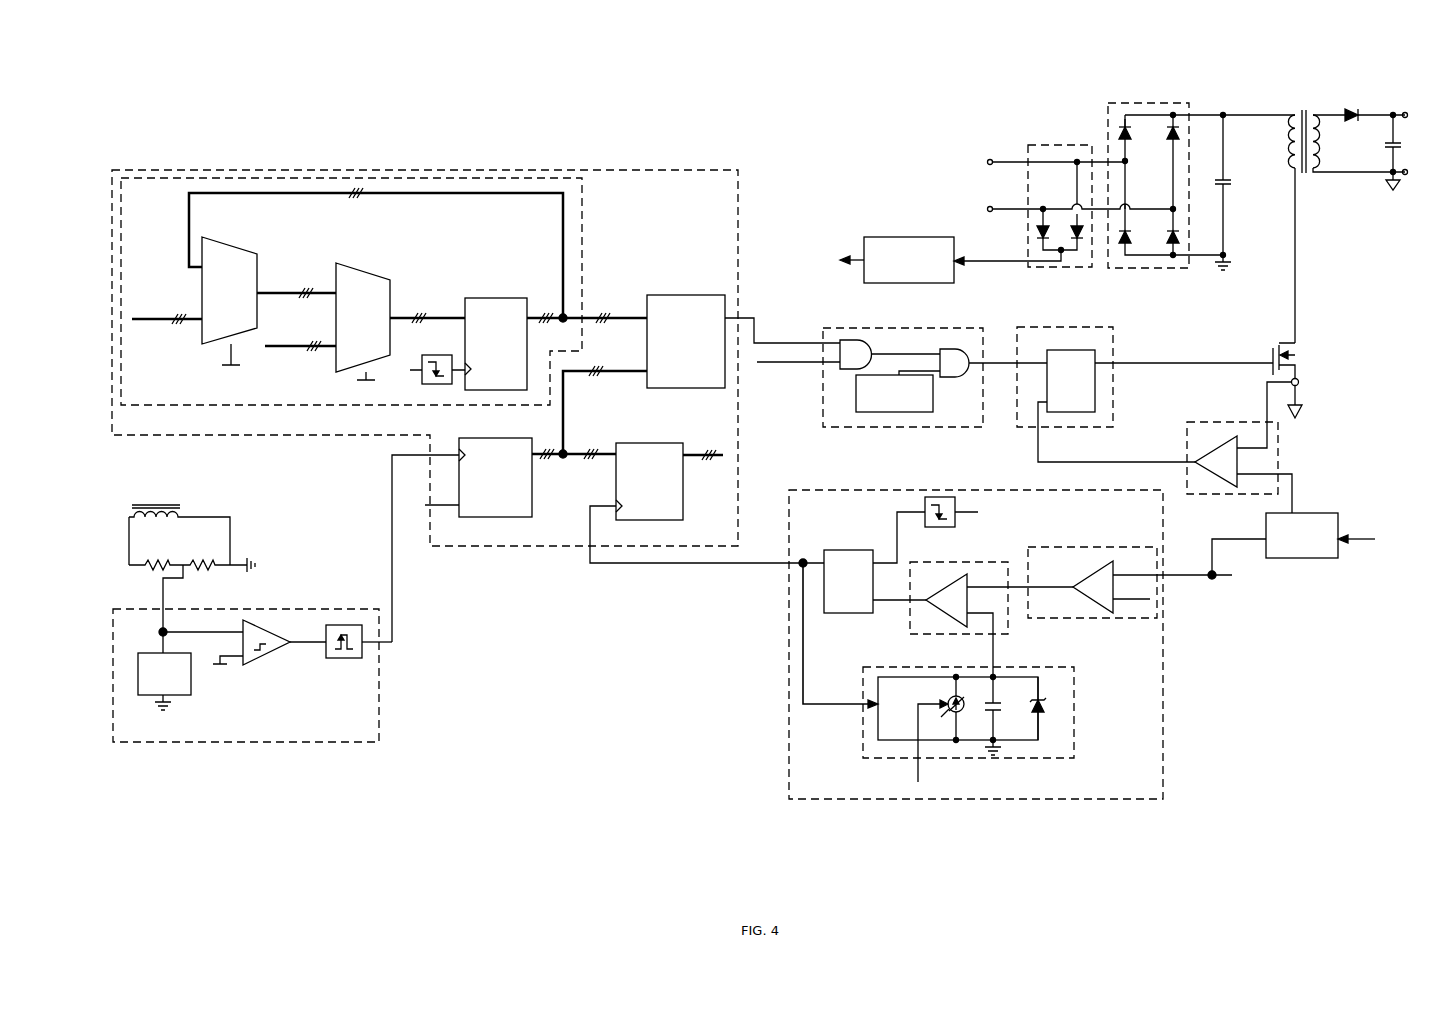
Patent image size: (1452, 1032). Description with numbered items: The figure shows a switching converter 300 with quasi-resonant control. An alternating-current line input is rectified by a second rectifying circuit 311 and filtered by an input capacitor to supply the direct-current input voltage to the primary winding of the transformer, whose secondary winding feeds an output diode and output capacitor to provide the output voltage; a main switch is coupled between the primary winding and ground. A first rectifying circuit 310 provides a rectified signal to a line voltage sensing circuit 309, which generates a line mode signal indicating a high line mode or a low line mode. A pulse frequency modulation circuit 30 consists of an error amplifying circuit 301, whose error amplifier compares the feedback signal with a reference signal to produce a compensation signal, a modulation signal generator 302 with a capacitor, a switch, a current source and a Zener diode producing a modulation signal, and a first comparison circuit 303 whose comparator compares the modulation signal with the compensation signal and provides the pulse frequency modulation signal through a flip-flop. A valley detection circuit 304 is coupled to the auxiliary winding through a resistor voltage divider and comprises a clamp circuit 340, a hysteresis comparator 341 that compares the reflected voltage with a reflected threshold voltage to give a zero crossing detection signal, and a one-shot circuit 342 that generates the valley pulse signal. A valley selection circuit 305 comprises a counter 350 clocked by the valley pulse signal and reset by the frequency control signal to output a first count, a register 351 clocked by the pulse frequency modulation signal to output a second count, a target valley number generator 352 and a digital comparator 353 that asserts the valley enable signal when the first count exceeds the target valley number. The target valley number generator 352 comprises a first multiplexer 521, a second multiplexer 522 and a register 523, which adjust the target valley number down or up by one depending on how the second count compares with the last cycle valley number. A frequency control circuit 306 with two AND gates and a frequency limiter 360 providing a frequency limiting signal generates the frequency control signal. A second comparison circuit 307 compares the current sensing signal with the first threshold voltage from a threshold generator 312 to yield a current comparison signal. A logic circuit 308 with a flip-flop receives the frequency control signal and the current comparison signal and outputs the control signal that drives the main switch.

The switching converter 300 is at (838, 61).
The pulse frequency modulation circuit 30 is at (799, 799).
The error amplifying circuit 301 is at (1058, 622).
The modulation signal generator 302 is at (888, 759).
The first comparison circuit 303 is at (922, 633).
The valley detection circuit 304 is at (190, 743).
The valley selection circuit 305 is at (187, 435).
The frequency control circuit 306 is at (856, 429).
The second comparison circuit 307 is at (1208, 496).
The logic circuit 308 is at (1032, 428).
The line voltage sensing circuit 309 is at (888, 283).
The first rectifying circuit 310 is at (1050, 268).
The second rectifying circuit 311 is at (1122, 268).
The threshold generator 312 is at (1306, 560).
The clamp circuit 340 is at (149, 700).
The hysteresis comparator 341 is at (274, 656).
The one-shot circuit 342 is at (338, 658).
The counter 350 is at (475, 517).
The register 351 is at (632, 524).
The target valley number generator 352 is at (193, 405).
The digital comparator 353 is at (659, 388).
The frequency limiter 360 is at (864, 411).
The first multiplexer 521 is at (239, 246).
The second multiplexer 522 is at (363, 271).
The register 523 is at (492, 299).